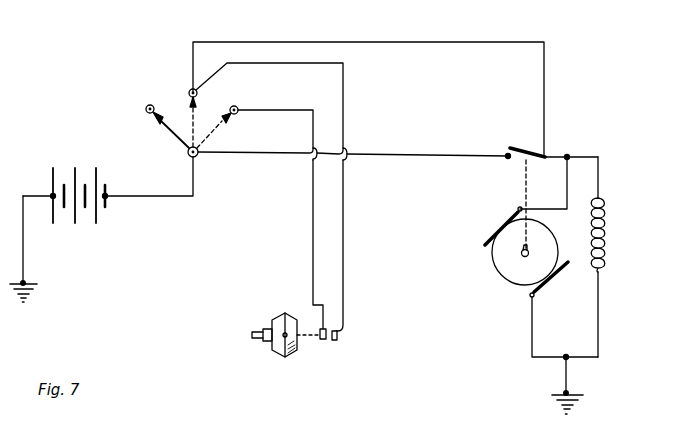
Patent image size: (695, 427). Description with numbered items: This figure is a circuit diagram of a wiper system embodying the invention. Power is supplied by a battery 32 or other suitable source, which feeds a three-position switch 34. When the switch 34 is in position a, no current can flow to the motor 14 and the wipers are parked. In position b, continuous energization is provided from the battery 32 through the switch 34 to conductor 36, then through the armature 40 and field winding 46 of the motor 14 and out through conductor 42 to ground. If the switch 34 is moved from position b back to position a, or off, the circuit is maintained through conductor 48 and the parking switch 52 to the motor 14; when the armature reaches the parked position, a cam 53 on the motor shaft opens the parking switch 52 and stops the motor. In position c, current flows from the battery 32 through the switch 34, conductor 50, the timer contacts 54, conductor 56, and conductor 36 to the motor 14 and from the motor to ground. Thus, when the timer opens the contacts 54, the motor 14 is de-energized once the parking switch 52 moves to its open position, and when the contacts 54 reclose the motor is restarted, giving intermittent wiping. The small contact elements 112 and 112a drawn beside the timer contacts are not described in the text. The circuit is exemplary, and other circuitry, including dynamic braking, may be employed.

The conductor 36 is at (451, 42).
The switch 34 is at (186, 126).
The conductor 48 is at (409, 155).
The battery 32 is at (79, 223).
The conductor 50 is at (313, 232).
The conductor 56 is at (343, 232).
The contact 112a is at (320, 329).
The contact 112 is at (337, 340).
The timer contacts 54 is at (322, 341).
The parking switch 52 is at (522, 145).
The field winding 46 is at (605, 233).
The armature 40 is at (493, 263).
The cam 53 is at (521, 257).
The motor 14 is at (577, 240).
The conductor 42 is at (566, 382).